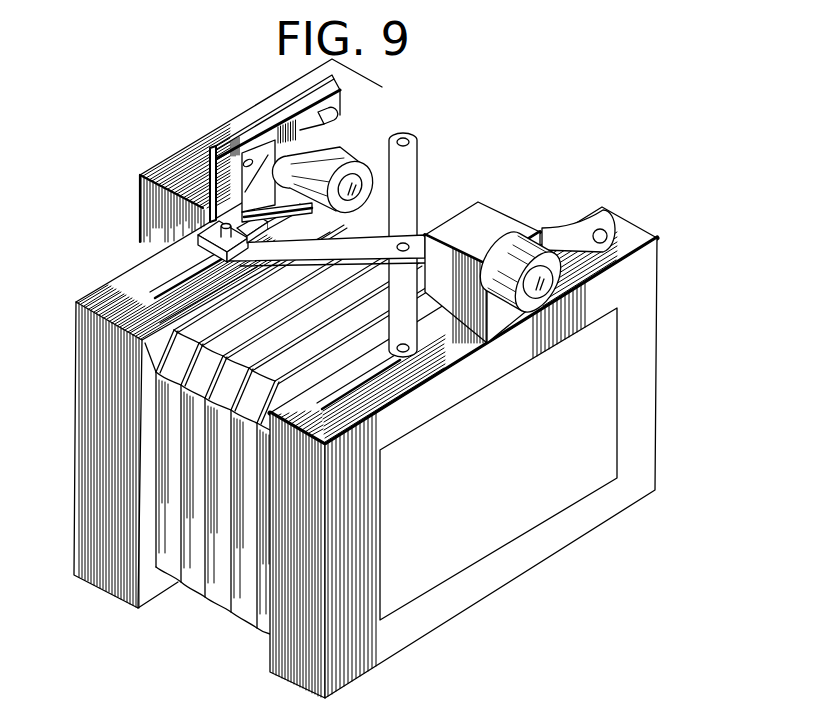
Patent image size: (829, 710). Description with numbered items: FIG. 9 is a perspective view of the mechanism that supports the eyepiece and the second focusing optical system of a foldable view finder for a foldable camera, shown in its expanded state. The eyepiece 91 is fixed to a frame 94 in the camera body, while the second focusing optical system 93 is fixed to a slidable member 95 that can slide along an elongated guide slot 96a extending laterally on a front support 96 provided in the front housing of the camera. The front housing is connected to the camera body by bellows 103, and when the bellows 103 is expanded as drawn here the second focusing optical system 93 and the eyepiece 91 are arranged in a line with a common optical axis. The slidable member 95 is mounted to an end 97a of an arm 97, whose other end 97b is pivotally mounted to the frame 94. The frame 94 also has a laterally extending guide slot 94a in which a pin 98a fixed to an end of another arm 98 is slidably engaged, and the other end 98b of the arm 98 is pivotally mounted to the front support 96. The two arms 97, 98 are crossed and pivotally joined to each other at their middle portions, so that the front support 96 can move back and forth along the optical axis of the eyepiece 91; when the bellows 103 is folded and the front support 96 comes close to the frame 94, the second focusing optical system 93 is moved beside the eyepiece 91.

The eyepiece 91 is at (548, 265).
The second focusing optical system 93 is at (330, 152).
The frame 94 is at (648, 383).
The guide slot 94a is at (360, 378).
The slidable member 95 is at (218, 216).
The front support 96 is at (80, 308).
The guide slot 96a is at (152, 287).
The arm 97 is at (270, 262).
The end of arm 97a is at (222, 256).
The pivot 97b is at (603, 214).
The arm 98 is at (398, 279).
The pin 98a is at (409, 345).
The end of arm 98b is at (412, 155).
The bellows 103 is at (212, 590).